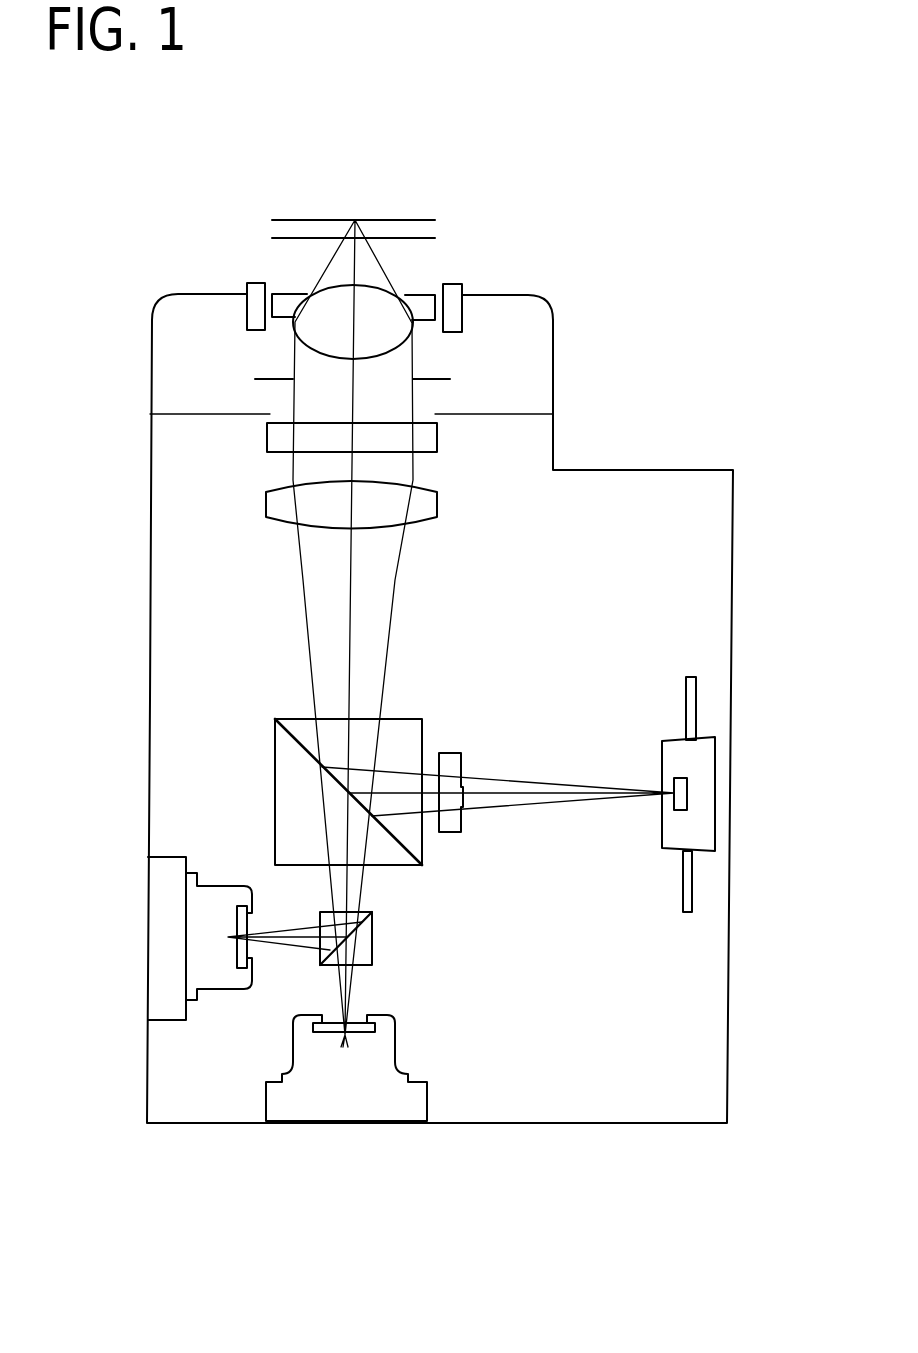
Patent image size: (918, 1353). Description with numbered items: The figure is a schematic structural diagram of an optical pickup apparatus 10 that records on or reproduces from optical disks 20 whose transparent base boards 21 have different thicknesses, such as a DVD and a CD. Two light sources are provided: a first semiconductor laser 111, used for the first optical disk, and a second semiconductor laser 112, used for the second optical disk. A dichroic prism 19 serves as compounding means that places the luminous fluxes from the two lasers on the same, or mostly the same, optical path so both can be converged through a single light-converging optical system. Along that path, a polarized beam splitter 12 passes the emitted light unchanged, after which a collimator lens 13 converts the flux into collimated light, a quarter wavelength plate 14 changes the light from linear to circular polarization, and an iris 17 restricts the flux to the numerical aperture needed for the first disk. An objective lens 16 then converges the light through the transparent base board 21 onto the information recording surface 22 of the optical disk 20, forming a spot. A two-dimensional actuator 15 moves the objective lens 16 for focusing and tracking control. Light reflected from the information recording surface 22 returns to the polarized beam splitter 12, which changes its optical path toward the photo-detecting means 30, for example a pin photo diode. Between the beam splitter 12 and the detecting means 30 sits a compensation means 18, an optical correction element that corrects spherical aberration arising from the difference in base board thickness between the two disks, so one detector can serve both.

The optical pickup apparatus 10 is at (632, 450).
The two-dimensional actuator 15 is at (475, 313).
The optical disk 20 is at (397, 183).
The information recording surface 22 is at (405, 220).
The transparent base board 21 is at (423, 229).
The objective lens 16 is at (403, 297).
The iris 17 is at (450, 379).
The quarter wavelength plate 14 is at (437, 436).
The collimator lens 13 is at (266, 500).
The polarized beam splitter 12 is at (275, 797).
The compensation means 18 is at (455, 753).
The photo-detecting means 30 is at (697, 795).
The dichroic prism 19 is at (373, 938).
The second semiconductor laser 112 is at (205, 930).
The first semiconductor laser 111 is at (332, 1073).